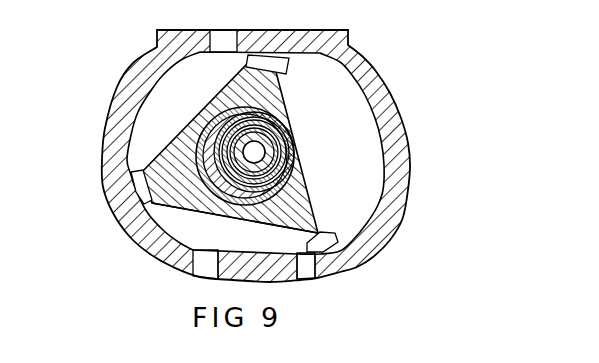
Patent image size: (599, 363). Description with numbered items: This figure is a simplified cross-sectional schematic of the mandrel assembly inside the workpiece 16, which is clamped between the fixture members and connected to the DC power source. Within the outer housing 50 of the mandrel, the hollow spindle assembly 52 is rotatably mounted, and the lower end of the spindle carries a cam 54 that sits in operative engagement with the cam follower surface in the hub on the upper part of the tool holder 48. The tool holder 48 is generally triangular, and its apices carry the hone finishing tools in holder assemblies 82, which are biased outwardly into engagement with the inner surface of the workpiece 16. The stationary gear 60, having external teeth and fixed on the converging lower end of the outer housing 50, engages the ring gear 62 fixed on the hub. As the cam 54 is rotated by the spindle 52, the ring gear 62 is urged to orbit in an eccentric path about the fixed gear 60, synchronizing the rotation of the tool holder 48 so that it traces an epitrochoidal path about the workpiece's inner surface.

The workpiece 16 is at (388, 90).
The tool holder 48 is at (272, 94).
The outer housing 50 is at (214, 118).
The spindle assembly 52 is at (283, 132).
The cam 54 is at (205, 214).
The stationary gear 60 is at (292, 153).
The ring gear 62 is at (300, 180).
The holder assembly 82 is at (132, 183).